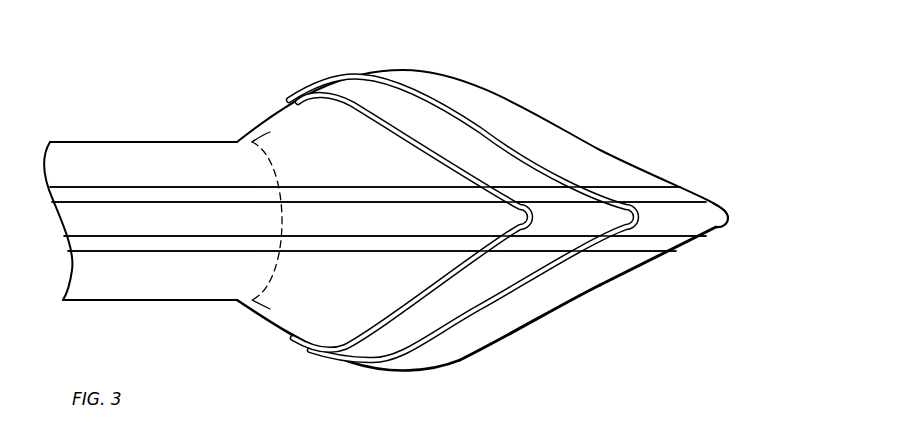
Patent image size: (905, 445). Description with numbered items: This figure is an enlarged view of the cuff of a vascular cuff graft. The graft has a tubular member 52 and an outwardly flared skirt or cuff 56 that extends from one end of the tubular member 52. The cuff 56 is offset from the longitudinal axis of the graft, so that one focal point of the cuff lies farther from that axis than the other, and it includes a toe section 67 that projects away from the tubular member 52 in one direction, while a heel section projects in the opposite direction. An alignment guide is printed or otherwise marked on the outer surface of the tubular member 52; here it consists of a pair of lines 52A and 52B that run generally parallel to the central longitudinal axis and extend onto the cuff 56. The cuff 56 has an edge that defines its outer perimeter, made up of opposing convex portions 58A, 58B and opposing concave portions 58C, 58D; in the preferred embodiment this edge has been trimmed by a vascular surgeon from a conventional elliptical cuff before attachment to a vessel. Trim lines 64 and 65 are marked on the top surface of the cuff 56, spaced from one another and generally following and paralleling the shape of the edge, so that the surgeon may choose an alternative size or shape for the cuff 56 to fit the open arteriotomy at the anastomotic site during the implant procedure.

The tubular member 52 is at (73, 139).
The alignment guide line 52A is at (210, 195).
The alignment guide line 52B is at (145, 250).
The cuff 56 is at (502, 240).
The convex portion 58A is at (272, 330).
The convex portion 58B is at (725, 223).
The concave portion 58C is at (560, 132).
The concave portion 58D is at (608, 275).
The trim line 64 is at (460, 117).
The trim line 65 is at (387, 117).
The toe section 67 is at (708, 213).